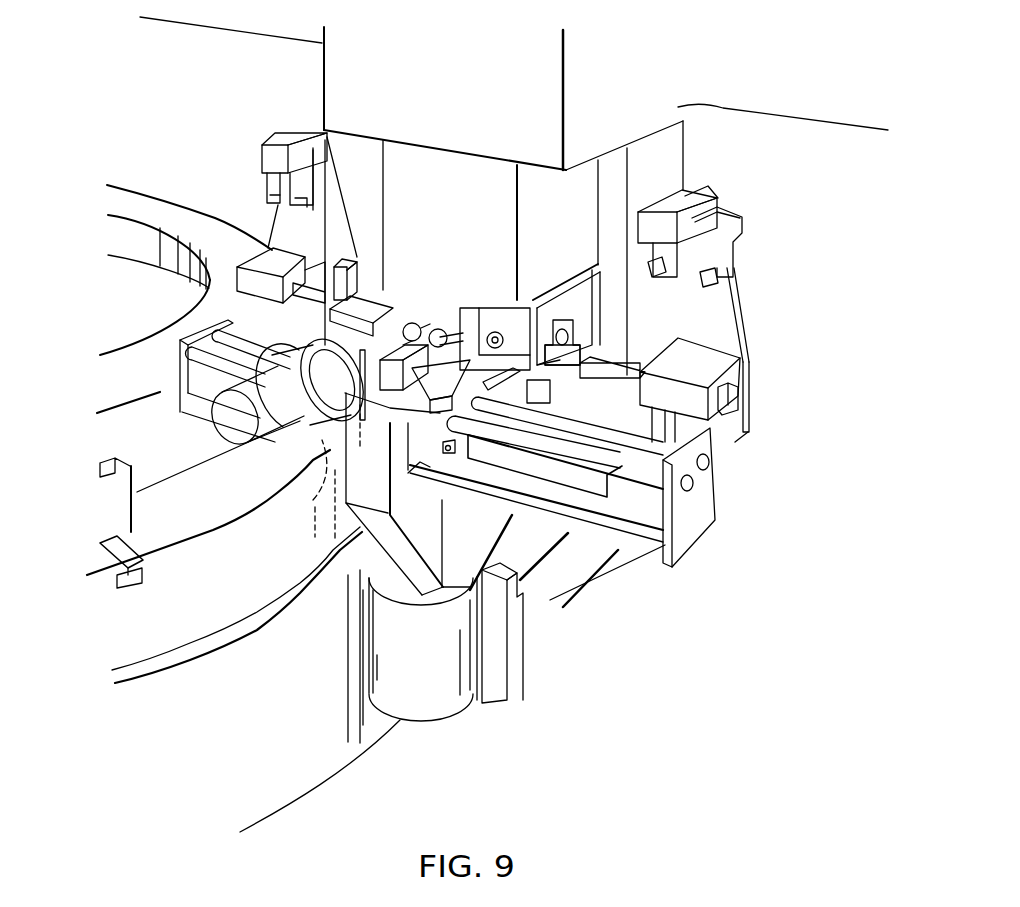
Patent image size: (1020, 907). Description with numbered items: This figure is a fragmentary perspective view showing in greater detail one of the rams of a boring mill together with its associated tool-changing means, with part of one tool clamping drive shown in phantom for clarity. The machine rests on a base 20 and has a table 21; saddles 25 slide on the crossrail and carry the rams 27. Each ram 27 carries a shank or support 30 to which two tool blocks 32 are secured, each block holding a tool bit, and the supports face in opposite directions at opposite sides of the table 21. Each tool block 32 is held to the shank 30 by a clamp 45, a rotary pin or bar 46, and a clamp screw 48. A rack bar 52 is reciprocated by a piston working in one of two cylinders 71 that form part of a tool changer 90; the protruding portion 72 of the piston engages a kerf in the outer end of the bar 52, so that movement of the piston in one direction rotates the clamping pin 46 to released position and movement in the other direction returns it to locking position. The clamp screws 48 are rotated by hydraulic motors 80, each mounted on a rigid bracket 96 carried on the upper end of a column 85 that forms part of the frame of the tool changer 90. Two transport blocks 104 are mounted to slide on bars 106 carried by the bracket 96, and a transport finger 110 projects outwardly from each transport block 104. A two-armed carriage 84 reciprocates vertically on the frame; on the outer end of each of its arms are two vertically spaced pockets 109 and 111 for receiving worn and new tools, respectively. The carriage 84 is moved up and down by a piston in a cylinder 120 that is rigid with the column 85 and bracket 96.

The base 20 is at (340, 760).
The table 21 is at (238, 600).
The saddles 25 is at (695, 116).
The rams 27 is at (582, 180).
The shank or support 30 is at (598, 264).
The tool blocks 32 is at (262, 172).
The clamp 45 is at (400, 297).
The rotary pin or bar 46 is at (568, 335).
The clamp screw 48 is at (505, 325).
The rack bar 52 is at (418, 322).
The cylinders 71 is at (383, 420).
The protruding portion 72 is at (445, 328).
The hydraulic motors 80 is at (287, 440).
The two-armed carriage 84 is at (275, 222).
The column 85 is at (673, 168).
The tool changers 90 is at (482, 727).
The rigid bracket 96 is at (195, 412).
The transport blocks 104 is at (430, 463).
The bars 106 is at (693, 483).
The pocket 109 is at (330, 152).
The transport finger 110 is at (503, 413).
The pocket 111 is at (313, 277).
The cylinder 120 is at (442, 707).